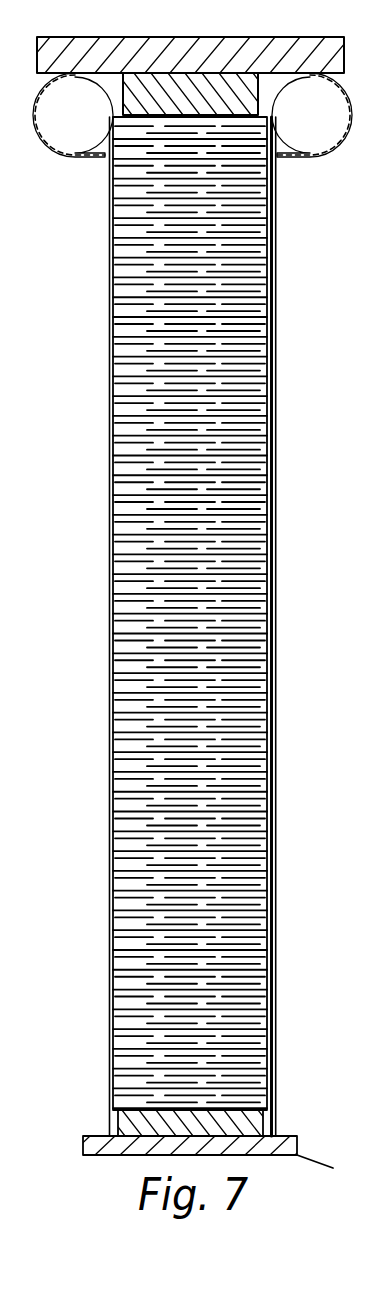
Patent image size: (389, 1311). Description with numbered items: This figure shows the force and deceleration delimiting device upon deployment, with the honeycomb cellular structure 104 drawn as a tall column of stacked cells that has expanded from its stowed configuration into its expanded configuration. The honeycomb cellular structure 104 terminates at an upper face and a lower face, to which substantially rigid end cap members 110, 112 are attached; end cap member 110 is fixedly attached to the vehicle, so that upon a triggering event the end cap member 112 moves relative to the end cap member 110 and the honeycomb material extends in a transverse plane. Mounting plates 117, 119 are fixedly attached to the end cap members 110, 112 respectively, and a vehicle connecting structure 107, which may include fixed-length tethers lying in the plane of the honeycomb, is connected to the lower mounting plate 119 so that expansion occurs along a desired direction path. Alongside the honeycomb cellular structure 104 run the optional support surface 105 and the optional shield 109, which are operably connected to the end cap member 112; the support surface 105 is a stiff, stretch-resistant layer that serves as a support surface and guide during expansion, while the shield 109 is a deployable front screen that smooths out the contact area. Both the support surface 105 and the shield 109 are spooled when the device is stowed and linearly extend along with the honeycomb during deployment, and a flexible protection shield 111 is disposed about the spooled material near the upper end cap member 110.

The honeycomb cellular structure 104 is at (227, 543).
The support surface 105 is at (272, 365).
The connecting structure 107 is at (328, 1166).
The shield 109 is at (277, 255).
The end cap member 110 is at (158, 91).
The protection shield 111 is at (67, 158).
The end cap member 112 is at (147, 1120).
The mounting plate 117 is at (246, 37).
The mounting plate 119 is at (107, 1157).